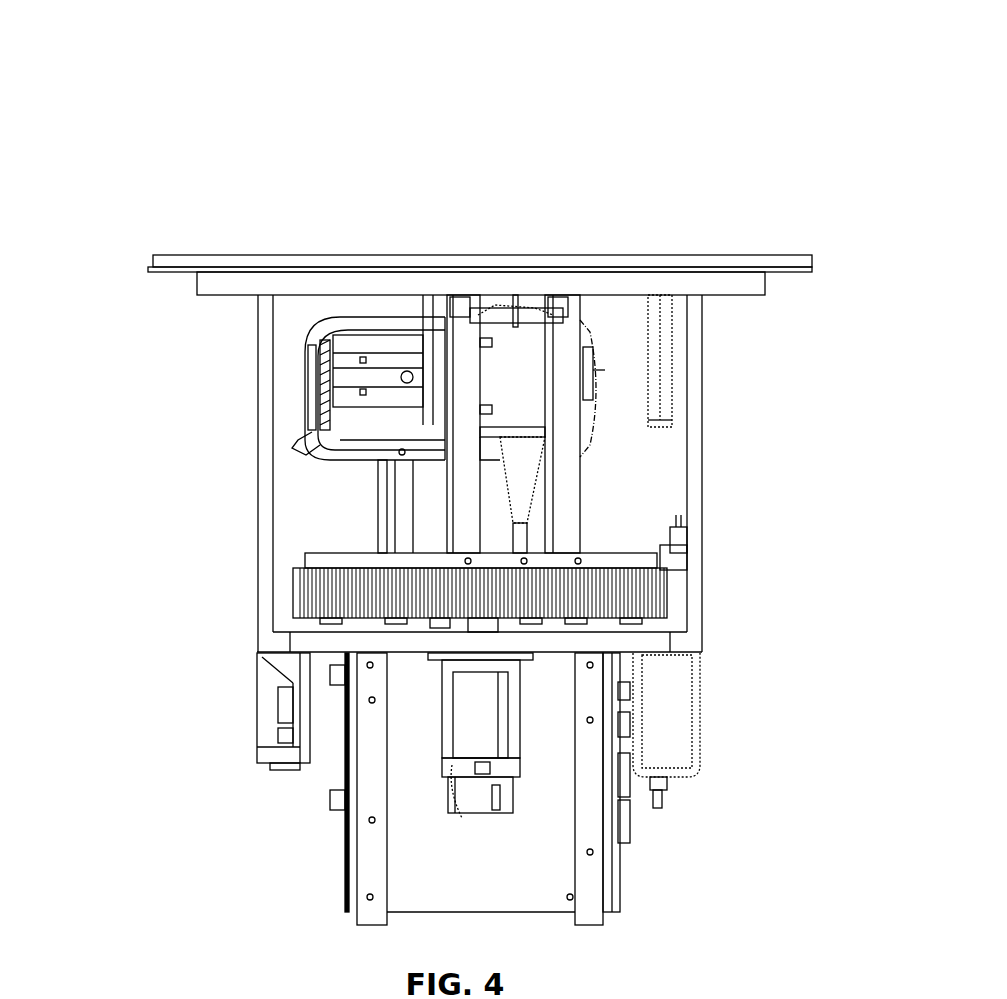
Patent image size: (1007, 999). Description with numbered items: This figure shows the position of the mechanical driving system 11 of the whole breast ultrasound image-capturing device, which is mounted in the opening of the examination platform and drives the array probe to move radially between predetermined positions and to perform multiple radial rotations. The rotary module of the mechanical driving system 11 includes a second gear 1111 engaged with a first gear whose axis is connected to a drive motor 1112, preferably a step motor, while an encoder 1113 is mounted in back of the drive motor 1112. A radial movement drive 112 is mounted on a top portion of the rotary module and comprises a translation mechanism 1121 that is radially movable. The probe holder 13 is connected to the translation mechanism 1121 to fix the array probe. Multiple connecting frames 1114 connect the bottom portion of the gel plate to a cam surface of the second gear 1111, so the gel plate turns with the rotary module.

The mechanical driving system 11 is at (708, 86).
The radial movement drive 112 is at (340, 317).
The translation mechanism 1121 is at (300, 365).
The probe holder 13 is at (523, 332).
The connecting frames 1114 is at (575, 525).
The second gear 1111 is at (642, 592).
The drive motor 1112 is at (482, 722).
The encoder 1113 is at (443, 805).